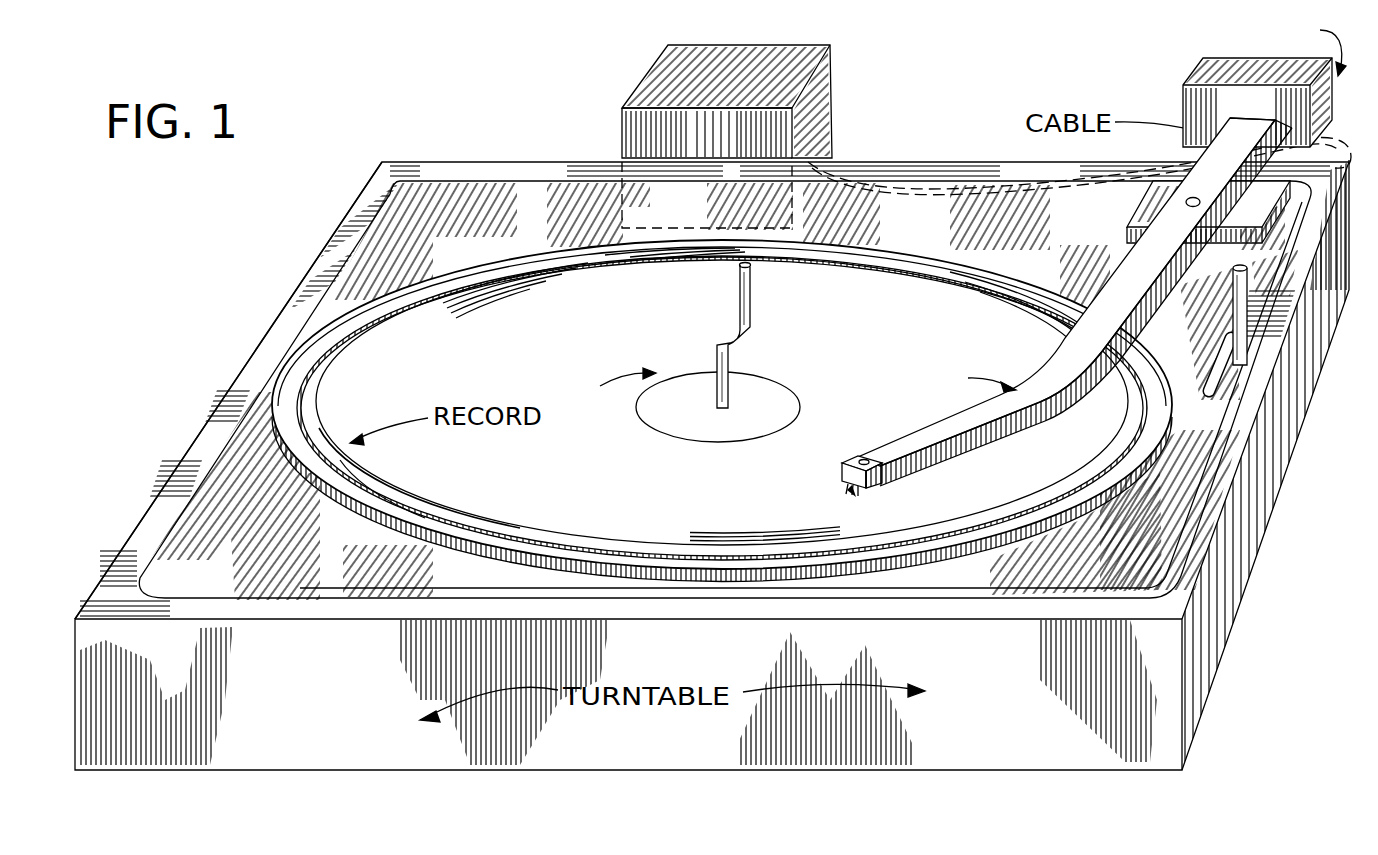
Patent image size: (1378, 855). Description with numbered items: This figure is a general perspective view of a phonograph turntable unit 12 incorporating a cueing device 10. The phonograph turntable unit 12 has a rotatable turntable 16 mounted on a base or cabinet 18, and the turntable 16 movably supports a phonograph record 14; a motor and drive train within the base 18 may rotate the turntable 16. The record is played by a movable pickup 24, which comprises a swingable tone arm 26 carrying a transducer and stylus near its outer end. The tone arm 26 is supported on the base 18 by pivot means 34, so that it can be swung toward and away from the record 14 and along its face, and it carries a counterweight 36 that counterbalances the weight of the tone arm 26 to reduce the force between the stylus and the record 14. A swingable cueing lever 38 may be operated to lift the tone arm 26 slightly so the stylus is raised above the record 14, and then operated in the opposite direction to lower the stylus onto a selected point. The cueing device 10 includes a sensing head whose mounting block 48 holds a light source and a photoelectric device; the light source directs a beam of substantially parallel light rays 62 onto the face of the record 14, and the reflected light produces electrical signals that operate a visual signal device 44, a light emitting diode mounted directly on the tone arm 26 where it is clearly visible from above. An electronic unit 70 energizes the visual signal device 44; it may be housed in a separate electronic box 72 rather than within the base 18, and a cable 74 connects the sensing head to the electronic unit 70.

The cueing device 10 is at (826, 463).
The phonograph turntable unit 12 is at (386, 148).
The phonograph record 14 is at (350, 330).
The rotatable turntable 16 is at (302, 360).
The base or cabinet 18 is at (207, 412).
The movable pickup 24 is at (936, 414).
The tone arm 26 is at (984, 440).
The pivot means 34 is at (1124, 206).
The counterweight 36 is at (1322, 112).
The cueing lever 38 is at (1250, 286).
The visual signal device 44 is at (863, 459).
The mounting block 48 is at (893, 482).
The light rays 62 is at (866, 476).
The electronic unit 70 is at (838, 62).
The electronic box 72 is at (622, 126).
The cable 74 is at (920, 186).